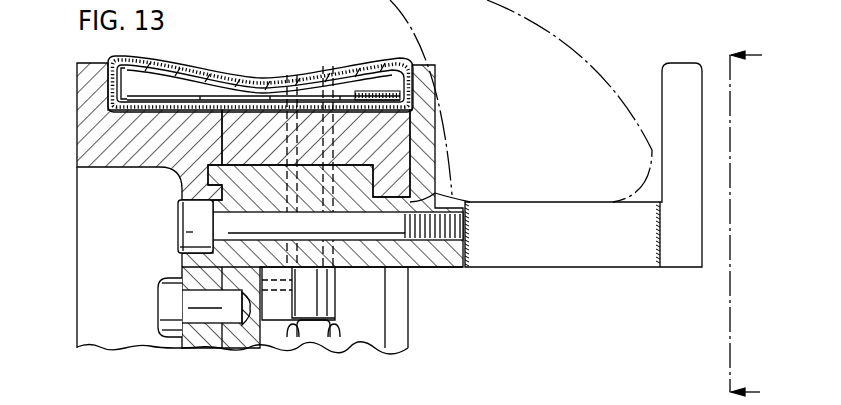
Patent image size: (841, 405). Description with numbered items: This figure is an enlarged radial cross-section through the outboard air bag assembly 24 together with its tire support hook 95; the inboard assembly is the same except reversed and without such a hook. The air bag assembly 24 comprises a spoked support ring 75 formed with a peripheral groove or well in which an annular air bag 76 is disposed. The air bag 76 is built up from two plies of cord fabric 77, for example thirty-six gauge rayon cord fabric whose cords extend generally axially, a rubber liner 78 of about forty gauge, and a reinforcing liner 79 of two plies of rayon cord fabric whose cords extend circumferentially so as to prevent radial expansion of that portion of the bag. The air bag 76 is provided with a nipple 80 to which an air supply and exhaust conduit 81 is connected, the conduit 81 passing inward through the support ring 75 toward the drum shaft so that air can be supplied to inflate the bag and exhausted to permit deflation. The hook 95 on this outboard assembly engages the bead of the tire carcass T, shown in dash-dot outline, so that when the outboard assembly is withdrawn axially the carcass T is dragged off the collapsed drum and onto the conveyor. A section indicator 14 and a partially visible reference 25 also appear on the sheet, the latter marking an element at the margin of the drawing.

The liner 78 is at (145, 72).
The air bag assembly 24 is at (236, 75).
The air bag 76 is at (287, 80).
The cord fabric 77 is at (328, 73).
The reinforcing liner 79 is at (375, 93).
The hook 95 is at (680, 170).
The tire carcass T is at (566, 40).
The section line 14 is at (753, 209).
The support ring 75 is at (240, 337).
The nipple 80 is at (333, 311).
The conduit 81 is at (317, 343).
The rim 25 is at (512, 401).